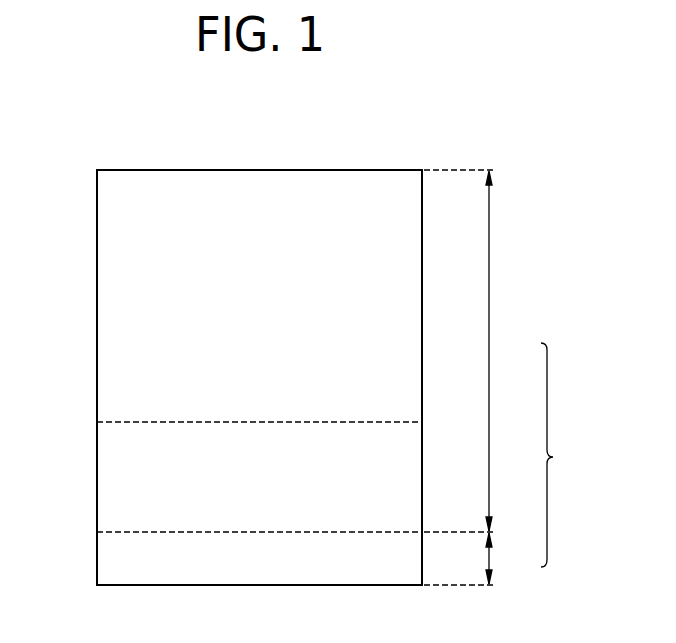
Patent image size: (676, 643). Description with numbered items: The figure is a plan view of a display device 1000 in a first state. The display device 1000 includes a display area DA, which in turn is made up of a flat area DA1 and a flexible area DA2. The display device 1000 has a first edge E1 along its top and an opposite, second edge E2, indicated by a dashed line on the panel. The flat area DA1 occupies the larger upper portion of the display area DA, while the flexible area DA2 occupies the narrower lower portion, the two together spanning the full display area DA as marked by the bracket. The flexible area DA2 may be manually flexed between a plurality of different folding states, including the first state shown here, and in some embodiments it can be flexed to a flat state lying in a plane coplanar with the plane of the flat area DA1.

The display device 1000 is at (395, 156).
The first edge E1 is at (182, 168).
The second edge E2 is at (120, 421).
The flat area DA1 is at (510, 351).
The flexible area DA2 is at (510, 558).
The display area DA is at (562, 455).